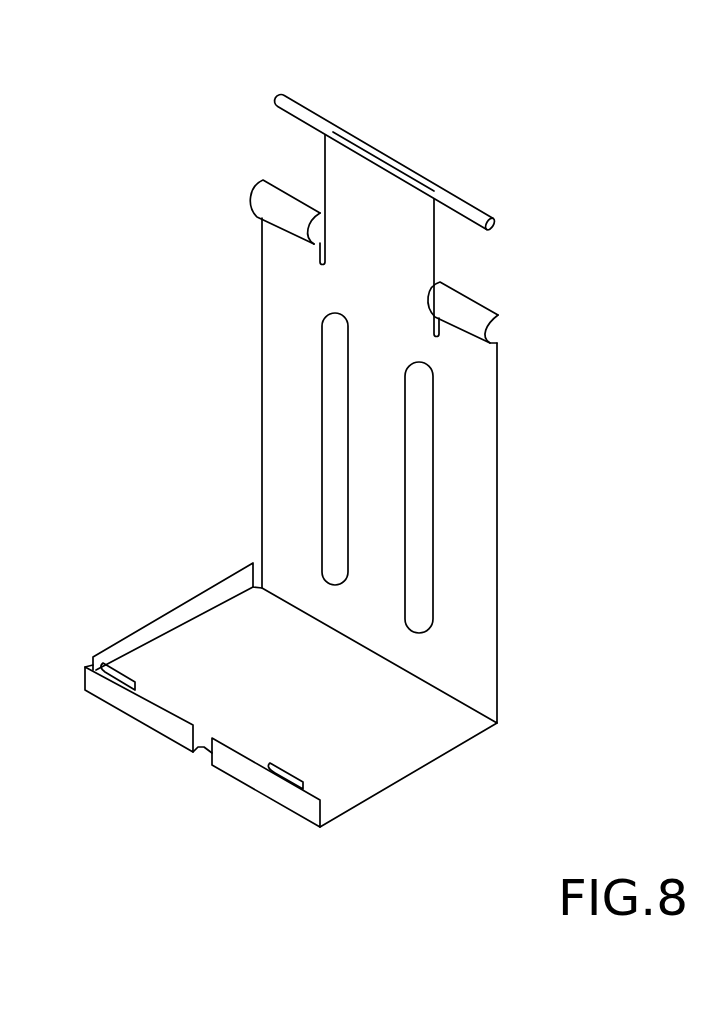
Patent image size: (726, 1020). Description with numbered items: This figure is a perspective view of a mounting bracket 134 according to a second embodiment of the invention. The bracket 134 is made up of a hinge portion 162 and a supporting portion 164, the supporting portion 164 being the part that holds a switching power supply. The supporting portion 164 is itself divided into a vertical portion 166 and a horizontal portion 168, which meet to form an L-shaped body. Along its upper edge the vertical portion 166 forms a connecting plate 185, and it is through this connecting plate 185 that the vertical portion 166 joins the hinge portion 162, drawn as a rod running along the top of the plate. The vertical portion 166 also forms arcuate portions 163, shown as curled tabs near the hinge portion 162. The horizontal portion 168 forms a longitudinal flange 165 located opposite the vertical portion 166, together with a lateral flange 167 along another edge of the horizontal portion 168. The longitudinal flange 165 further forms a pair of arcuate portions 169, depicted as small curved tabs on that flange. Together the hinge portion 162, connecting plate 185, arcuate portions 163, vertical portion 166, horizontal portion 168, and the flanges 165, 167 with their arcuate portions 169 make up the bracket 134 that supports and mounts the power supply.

The bracket 134 is at (692, 84).
The hinge portion 162 is at (468, 205).
The arcuate portions 163 is at (465, 313).
The supporting portion 164 is at (428, 735).
The longitudinal flange 165 is at (153, 717).
The vertical portion 166 is at (477, 590).
The lateral flange 167 is at (182, 613).
The horizontal portion 168 is at (388, 757).
The arcuate portions 169 is at (287, 773).
The connecting plate 185 is at (410, 223).